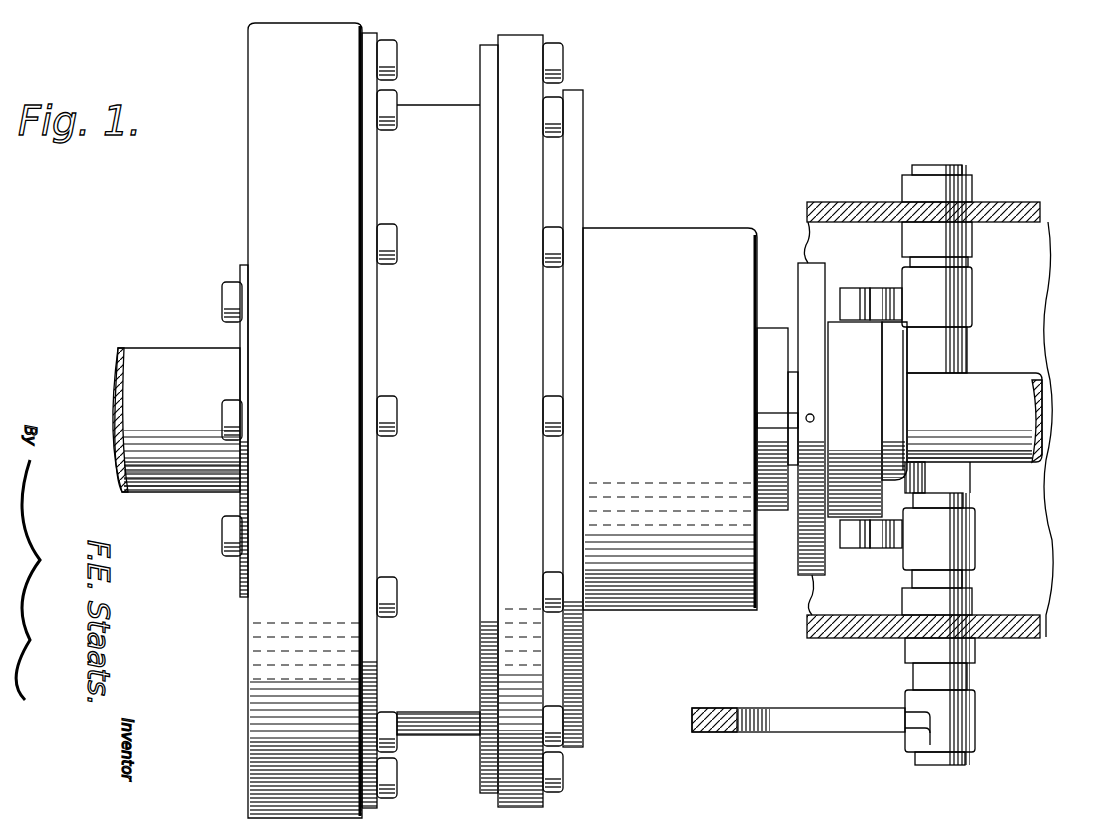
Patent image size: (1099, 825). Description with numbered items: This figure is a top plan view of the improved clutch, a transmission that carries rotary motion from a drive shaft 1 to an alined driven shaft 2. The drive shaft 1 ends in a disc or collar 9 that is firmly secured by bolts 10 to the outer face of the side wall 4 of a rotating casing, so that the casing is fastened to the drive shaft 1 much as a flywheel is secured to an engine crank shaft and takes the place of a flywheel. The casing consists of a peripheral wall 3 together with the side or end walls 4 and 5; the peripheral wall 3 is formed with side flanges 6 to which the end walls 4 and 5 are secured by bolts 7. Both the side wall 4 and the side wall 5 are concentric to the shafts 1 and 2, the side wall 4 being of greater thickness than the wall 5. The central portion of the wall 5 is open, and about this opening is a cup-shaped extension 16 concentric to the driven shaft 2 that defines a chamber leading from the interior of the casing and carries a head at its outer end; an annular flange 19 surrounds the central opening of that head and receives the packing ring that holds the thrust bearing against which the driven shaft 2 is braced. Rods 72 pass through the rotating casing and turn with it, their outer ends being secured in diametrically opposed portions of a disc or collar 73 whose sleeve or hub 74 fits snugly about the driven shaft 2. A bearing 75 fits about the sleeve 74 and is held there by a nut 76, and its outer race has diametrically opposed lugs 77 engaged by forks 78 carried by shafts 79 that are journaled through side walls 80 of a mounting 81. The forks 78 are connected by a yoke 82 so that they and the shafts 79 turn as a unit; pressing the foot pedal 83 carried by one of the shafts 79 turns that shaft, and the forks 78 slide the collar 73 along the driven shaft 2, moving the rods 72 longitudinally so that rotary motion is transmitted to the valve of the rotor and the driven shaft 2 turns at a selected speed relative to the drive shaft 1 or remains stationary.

The drive shaft 1 is at (195, 470).
The driven shaft 2 is at (1005, 383).
The peripheral wall 3 is at (432, 105).
The side wall 4 is at (262, 168).
The side wall 5 is at (525, 178).
The side flanges 6 is at (485, 160).
The bolts 7 is at (548, 255).
The disc or collar 9 is at (240, 374).
The bolts 10 is at (228, 548).
The cup-shaped extension 16 is at (662, 245).
The annular flange 19 is at (768, 345).
The rods 72 is at (798, 422).
The disc or collar 73 is at (810, 527).
The sleeve or hub 74 is at (905, 410).
The bearing 75 is at (855, 419).
The nut 76 is at (887, 395).
The lugs 77 is at (858, 290).
The forks 78 is at (893, 290).
The shafts 79 is at (965, 262).
The side walls 80 is at (1013, 205).
The mounting 81 is at (1028, 532).
The yoke 82 is at (952, 476).
The foot pedal 83 is at (787, 722).